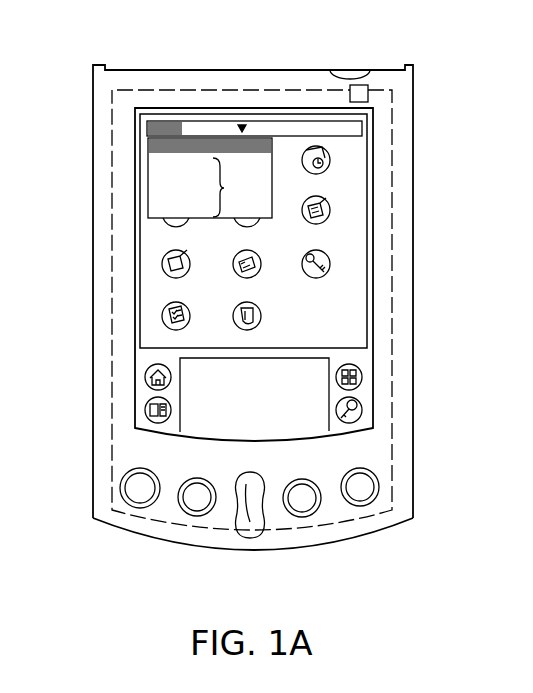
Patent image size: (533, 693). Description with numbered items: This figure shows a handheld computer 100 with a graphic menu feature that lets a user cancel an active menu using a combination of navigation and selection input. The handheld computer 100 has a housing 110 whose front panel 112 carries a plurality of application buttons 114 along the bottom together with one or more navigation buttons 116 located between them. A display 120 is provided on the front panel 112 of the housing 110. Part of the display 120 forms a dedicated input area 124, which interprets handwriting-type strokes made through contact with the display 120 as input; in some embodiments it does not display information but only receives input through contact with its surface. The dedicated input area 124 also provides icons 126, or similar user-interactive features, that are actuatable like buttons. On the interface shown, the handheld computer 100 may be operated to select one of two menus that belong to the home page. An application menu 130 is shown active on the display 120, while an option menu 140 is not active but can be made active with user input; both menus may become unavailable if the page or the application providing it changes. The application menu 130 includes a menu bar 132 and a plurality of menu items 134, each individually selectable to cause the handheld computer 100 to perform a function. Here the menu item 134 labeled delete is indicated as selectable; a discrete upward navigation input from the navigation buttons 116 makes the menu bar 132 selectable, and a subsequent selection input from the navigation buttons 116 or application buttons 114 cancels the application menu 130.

The handheld computer 100 is at (369, 32).
The housing 110 is at (425, 264).
The front panel 112 is at (111, 535).
The application buttons 114 is at (197, 500).
The navigation buttons 116 is at (262, 515).
The display 120 is at (336, 330).
The dedicated input area 124 is at (270, 413).
The icons 126 is at (145, 410).
The application menu 130 is at (143, 179).
The menu bar 132 is at (147, 118).
The menu items 134 is at (224, 188).
The option menu 140 is at (247, 118).